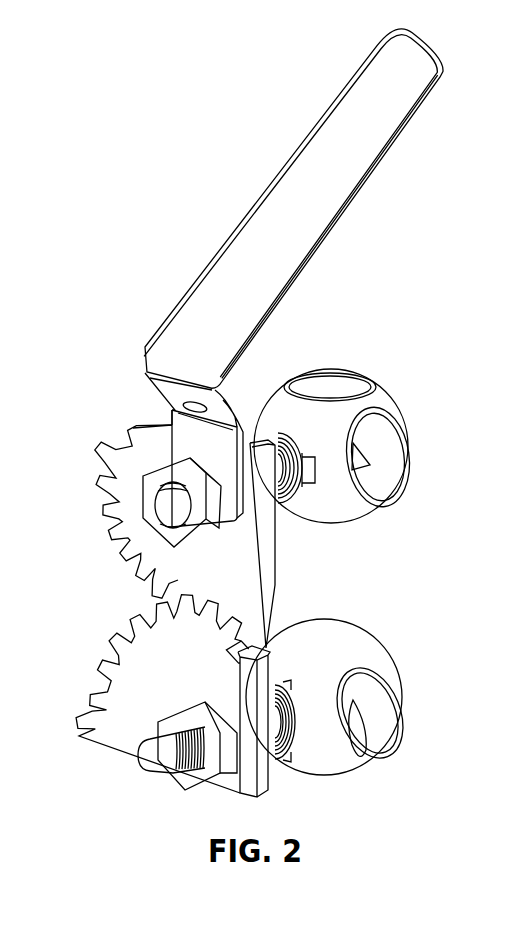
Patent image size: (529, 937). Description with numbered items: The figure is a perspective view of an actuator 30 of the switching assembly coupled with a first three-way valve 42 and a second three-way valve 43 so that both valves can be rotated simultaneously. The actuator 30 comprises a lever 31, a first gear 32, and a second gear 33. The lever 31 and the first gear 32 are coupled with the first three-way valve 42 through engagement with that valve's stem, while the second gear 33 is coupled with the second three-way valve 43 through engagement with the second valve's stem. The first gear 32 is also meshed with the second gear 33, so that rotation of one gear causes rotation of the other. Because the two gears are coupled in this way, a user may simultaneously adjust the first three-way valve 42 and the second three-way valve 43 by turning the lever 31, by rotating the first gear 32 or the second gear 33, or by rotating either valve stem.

The actuator 30 is at (128, 302).
The lever 31 is at (188, 350).
The first gear 32 is at (193, 572).
The second gear 33 is at (152, 676).
The first three-way valve 42 is at (403, 354).
The second three-way valve 43 is at (399, 611).